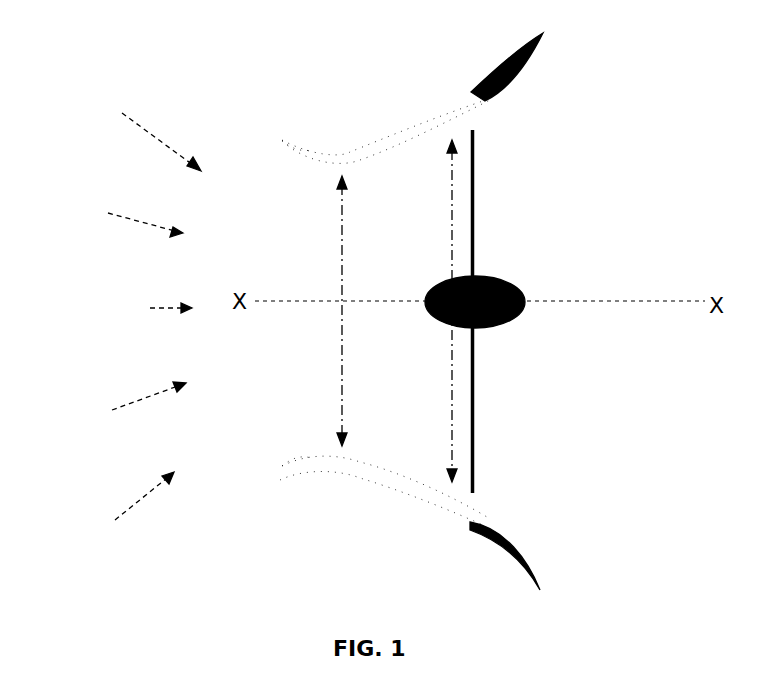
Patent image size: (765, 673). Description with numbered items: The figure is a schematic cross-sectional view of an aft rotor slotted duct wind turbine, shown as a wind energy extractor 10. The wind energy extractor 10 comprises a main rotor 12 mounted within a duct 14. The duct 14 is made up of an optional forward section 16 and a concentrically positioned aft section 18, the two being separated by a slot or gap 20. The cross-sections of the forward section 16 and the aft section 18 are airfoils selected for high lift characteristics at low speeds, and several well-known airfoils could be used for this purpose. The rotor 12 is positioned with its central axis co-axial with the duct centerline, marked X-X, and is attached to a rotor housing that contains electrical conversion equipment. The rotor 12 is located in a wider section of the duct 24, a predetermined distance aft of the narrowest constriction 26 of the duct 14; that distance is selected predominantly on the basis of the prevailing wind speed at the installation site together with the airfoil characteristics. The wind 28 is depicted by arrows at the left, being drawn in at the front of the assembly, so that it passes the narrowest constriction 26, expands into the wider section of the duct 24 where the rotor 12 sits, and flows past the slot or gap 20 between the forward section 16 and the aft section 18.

The wind energy extractor 10 is at (704, 182).
The main rotor 12 is at (513, 327).
The duct 14 is at (386, 126).
The forward section 16 is at (342, 150).
The aft section 18 is at (517, 82).
The slot or gap 20 is at (473, 103).
The wider section of the duct 24 is at (444, 311).
The narrowest constriction 26 is at (348, 311).
The wind 28 is at (131, 317).